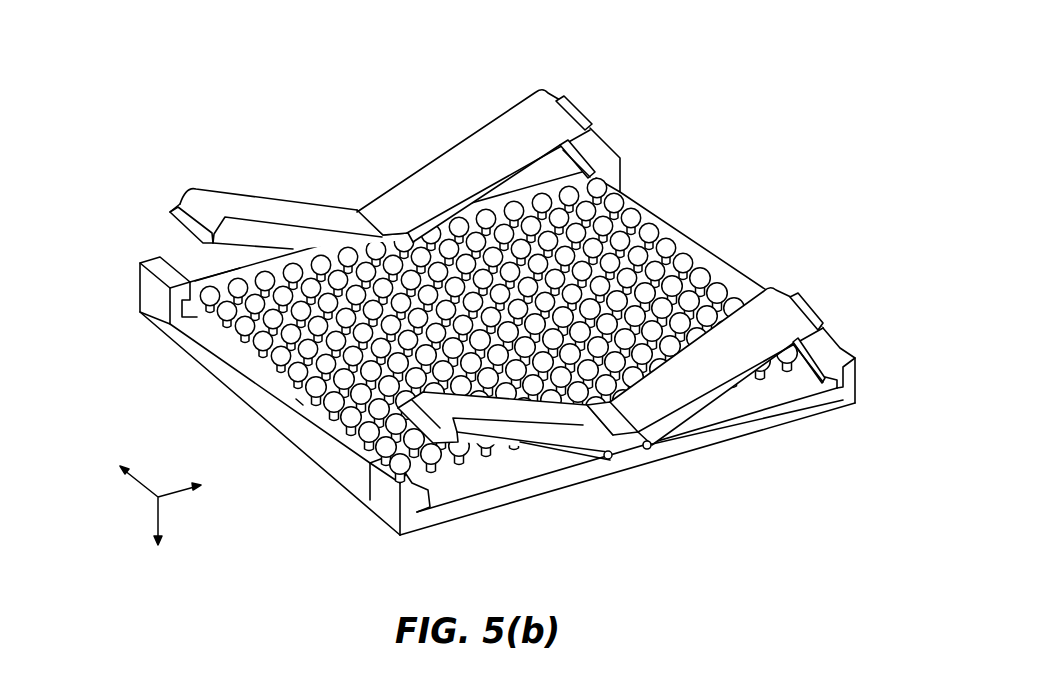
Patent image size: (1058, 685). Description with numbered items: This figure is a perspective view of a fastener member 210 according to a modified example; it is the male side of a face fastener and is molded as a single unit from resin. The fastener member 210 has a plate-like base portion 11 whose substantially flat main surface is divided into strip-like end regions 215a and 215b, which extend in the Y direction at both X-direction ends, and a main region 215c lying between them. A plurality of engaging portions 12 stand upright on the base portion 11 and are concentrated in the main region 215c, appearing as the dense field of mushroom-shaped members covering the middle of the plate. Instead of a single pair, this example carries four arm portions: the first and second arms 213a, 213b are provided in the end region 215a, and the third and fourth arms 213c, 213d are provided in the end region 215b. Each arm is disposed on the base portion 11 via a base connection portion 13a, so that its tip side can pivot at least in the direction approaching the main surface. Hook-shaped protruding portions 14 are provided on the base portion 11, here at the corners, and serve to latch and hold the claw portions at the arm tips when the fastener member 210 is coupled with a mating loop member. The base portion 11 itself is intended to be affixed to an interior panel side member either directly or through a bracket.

The fastener member 210 is at (764, 124).
The base portion 11 is at (282, 455).
The engaging portions 12 is at (664, 222).
The base connection portion 13a is at (372, 212).
The hook-shaped protruding portions 14 is at (612, 140).
The first arm 213a is at (256, 193).
The second arm 213b is at (465, 130).
The third arm 213c is at (528, 445).
The fourth arm 213d is at (738, 378).
The end region 215a is at (213, 283).
The end region 215b is at (472, 476).
The main region 215c is at (295, 402).